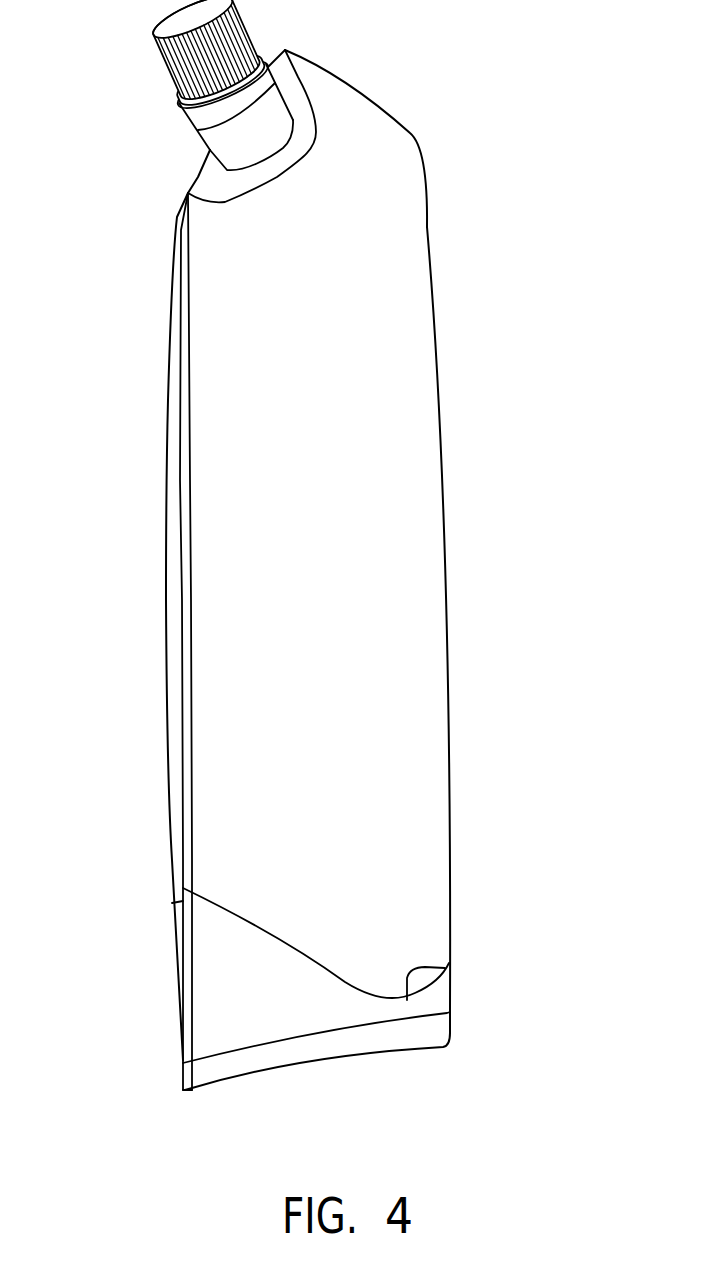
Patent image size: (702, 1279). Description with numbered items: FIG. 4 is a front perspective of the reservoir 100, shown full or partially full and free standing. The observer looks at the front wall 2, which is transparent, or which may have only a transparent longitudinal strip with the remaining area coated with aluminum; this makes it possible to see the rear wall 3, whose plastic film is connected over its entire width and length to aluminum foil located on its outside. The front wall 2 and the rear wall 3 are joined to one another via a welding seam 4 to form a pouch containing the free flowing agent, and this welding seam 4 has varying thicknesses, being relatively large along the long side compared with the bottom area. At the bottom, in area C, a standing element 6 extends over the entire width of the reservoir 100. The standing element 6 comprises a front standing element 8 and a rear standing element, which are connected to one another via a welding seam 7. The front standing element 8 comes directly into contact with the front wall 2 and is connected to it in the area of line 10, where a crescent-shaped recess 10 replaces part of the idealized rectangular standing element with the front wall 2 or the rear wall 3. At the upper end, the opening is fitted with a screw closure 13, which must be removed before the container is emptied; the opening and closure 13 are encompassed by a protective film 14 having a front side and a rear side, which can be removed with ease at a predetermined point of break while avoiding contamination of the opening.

The reservoir 100 is at (490, 262).
The front wall 2 is at (401, 573).
The rear wall 3 is at (173, 552).
The welding seam 4 is at (185, 631).
The standing element 6 is at (383, 1068).
The welding seam 7 is at (185, 1080).
The front standing element 8 is at (262, 1003).
The crescent-shaped recess 10 is at (445, 968).
The closure 13 is at (170, 72).
The protective film 14 is at (298, 110).
The area C is at (323, 1060).